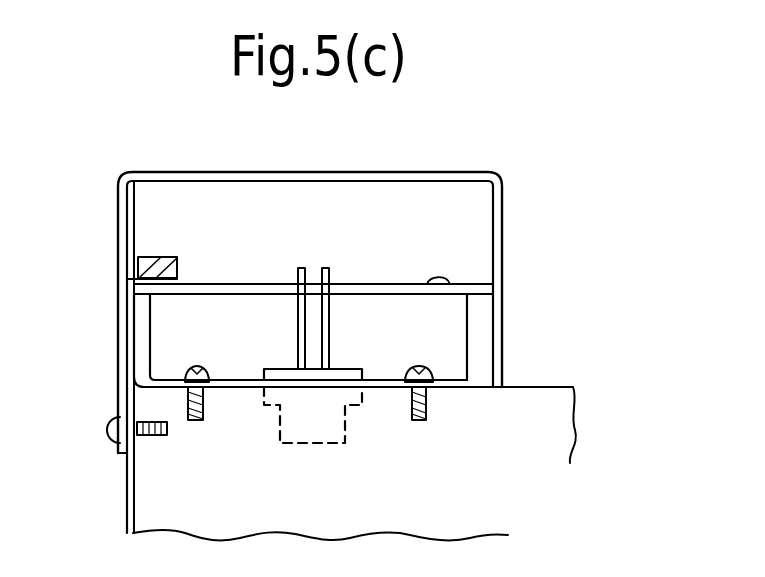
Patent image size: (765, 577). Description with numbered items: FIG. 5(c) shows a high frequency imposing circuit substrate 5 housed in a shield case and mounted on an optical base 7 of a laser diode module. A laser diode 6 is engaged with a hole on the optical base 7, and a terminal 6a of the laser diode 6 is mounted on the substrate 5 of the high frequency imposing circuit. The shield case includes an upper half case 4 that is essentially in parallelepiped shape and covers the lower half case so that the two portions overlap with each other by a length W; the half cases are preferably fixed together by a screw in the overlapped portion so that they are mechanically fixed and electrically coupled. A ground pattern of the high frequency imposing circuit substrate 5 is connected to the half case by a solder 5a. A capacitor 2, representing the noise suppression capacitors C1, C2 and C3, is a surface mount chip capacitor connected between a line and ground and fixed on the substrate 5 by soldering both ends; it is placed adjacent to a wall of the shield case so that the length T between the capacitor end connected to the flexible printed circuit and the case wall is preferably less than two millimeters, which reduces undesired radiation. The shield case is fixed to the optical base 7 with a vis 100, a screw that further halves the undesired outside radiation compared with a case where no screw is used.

The capacitor 2 is at (178, 263).
The upper half case 4 is at (497, 189).
The high frequency imposing circuit substrate 5 is at (233, 286).
The solder 5a is at (449, 278).
The laser diode 6 is at (346, 419).
The terminal 6a is at (331, 267).
The optical base 7 is at (479, 346).
The vis 100 is at (195, 423).
The length T is at (72, 234).
The length W is at (67, 282).